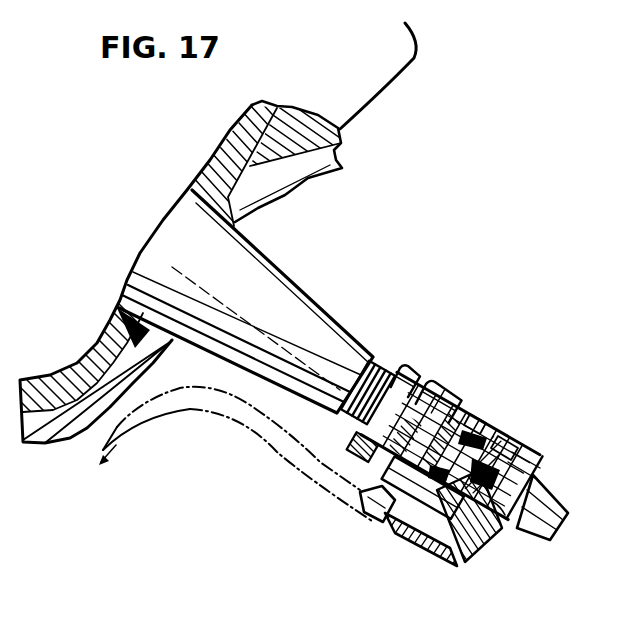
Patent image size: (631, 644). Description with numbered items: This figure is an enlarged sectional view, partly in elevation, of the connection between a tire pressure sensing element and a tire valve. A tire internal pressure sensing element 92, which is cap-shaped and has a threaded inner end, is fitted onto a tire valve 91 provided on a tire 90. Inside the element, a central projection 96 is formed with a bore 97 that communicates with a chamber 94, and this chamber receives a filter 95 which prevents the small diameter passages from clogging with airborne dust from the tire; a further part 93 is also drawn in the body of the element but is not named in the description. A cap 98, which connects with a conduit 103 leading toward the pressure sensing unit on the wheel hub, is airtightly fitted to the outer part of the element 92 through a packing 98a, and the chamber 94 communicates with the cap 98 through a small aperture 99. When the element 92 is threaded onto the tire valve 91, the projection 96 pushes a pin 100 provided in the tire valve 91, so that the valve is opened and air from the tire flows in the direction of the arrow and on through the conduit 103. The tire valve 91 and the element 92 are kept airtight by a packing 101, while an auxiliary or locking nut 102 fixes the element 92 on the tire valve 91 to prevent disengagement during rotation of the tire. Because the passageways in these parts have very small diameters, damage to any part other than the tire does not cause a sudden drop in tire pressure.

The tire 90 is at (392, 87).
The tire valve 91 is at (307, 303).
The tire internal pressure sensing element 92 is at (480, 413).
The nut 93 is at (357, 457).
The chamber 94 is at (511, 452).
The filter 95 is at (521, 465).
The central projection 96 is at (441, 535).
The bore 97 is at (488, 428).
The cap 98 is at (457, 567).
The packing 98a is at (500, 532).
The small aperture 99 is at (498, 522).
The pin 100 is at (460, 417).
The packing 101 is at (410, 527).
The auxiliary or locking nut 102 is at (407, 370).
The conduit 103 is at (167, 424).